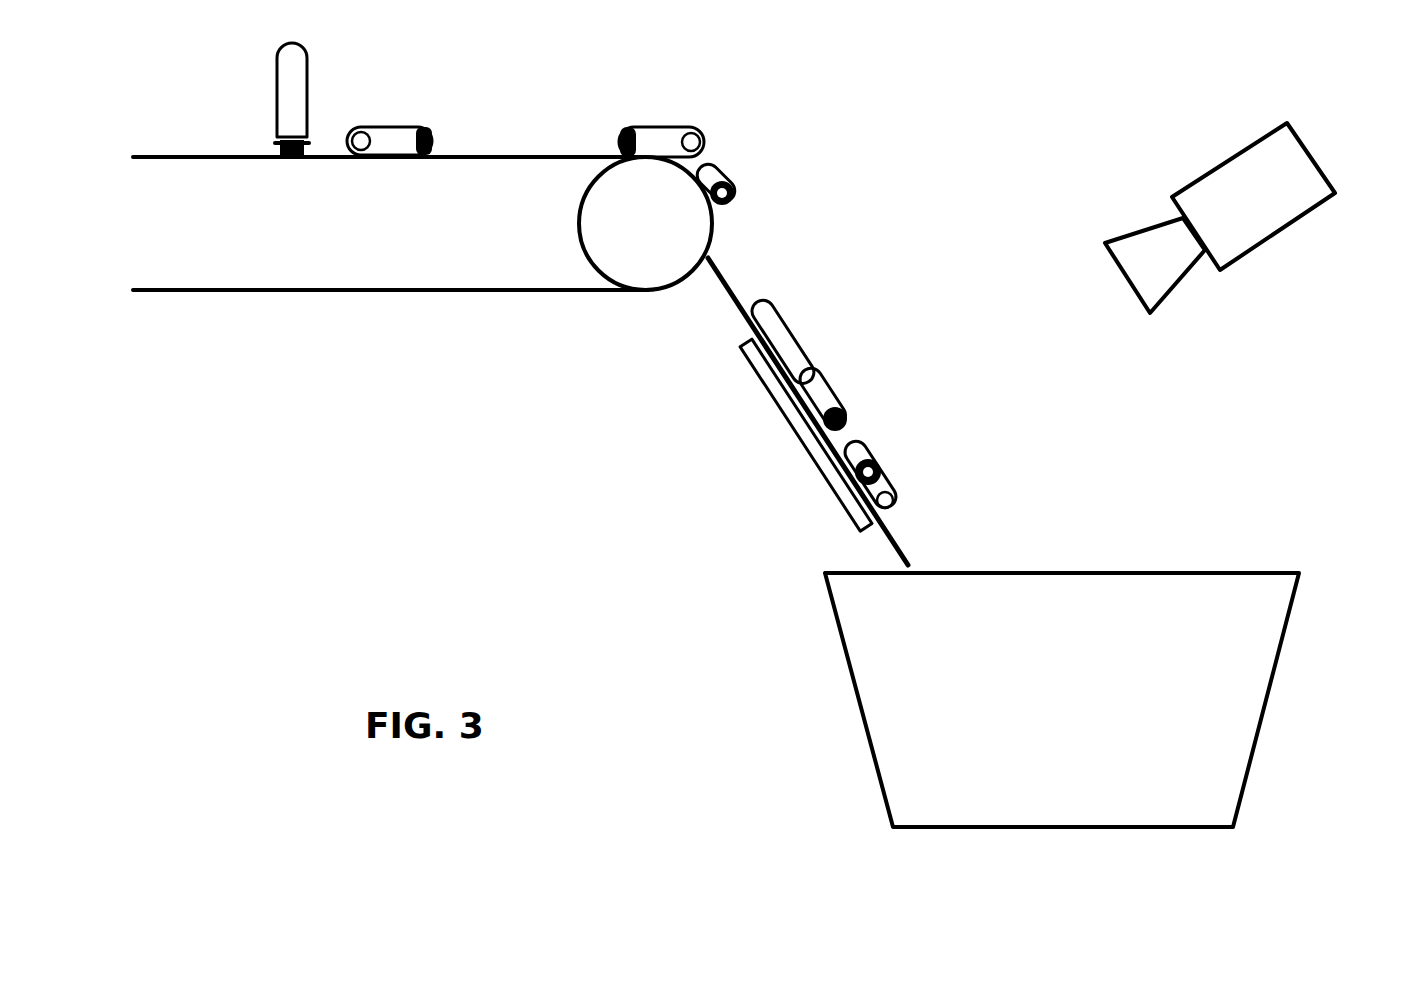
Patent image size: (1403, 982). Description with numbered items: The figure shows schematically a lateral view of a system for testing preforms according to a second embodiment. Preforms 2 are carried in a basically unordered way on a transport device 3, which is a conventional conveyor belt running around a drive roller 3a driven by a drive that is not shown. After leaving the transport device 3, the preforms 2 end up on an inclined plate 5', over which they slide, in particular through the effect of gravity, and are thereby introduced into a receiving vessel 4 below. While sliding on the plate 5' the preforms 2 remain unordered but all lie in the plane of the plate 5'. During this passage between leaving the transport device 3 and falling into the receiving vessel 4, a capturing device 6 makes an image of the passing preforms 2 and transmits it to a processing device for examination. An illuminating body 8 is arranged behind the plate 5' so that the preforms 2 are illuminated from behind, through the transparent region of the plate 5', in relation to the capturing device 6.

The preforms 2 is at (399, 134).
The transport device 3 is at (370, 290).
The drive roller 3a is at (643, 233).
The receiving vessel 4 is at (1238, 688).
The plate 5' is at (776, 411).
The capturing device 6 is at (1313, 187).
The illuminating body 8 is at (780, 395).